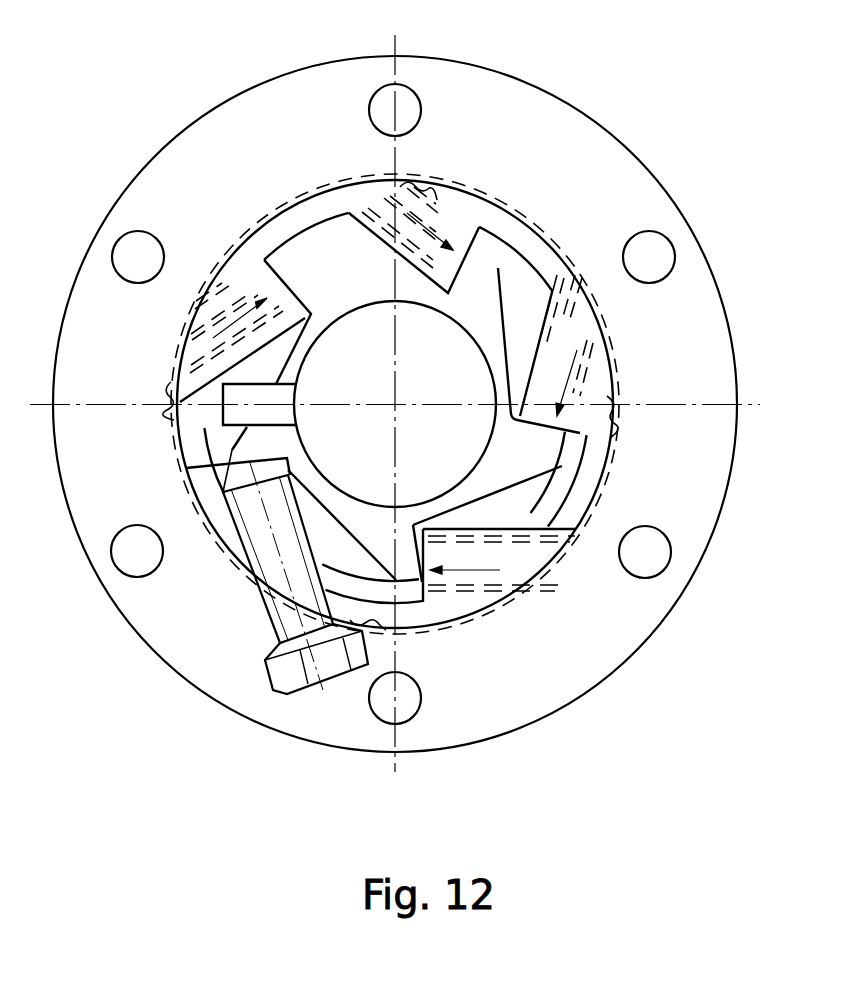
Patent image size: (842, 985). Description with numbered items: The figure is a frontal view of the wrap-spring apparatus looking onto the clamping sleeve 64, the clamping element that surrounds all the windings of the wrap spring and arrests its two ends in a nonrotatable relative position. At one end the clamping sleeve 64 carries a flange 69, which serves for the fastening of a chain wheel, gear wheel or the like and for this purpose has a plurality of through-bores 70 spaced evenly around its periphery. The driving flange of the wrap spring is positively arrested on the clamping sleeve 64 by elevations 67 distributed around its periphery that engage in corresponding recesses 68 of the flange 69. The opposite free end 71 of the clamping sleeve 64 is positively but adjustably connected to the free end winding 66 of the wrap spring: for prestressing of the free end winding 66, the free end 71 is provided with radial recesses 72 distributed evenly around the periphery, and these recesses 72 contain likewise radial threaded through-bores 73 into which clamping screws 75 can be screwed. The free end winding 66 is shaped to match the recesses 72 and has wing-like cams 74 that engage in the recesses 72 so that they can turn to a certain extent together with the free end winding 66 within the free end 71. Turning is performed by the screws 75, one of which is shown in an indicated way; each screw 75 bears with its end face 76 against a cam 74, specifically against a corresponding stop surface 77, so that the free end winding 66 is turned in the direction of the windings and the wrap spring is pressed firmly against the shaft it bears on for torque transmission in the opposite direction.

The clamping sleeve 64 is at (593, 458).
The free end winding 66 is at (474, 287).
The elevations 67 is at (528, 203).
The recesses 68 is at (510, 433).
The flange 69 is at (537, 130).
The through-bores 70 is at (653, 256).
The free end 71 is at (263, 247).
The radial recesses 72 is at (352, 252).
The threaded through-bores 73 is at (236, 500).
The wing-like cams 74 is at (540, 455).
The clamping screws 75 is at (308, 668).
The end face 76 is at (250, 463).
The stop surfaces 77 is at (250, 460).